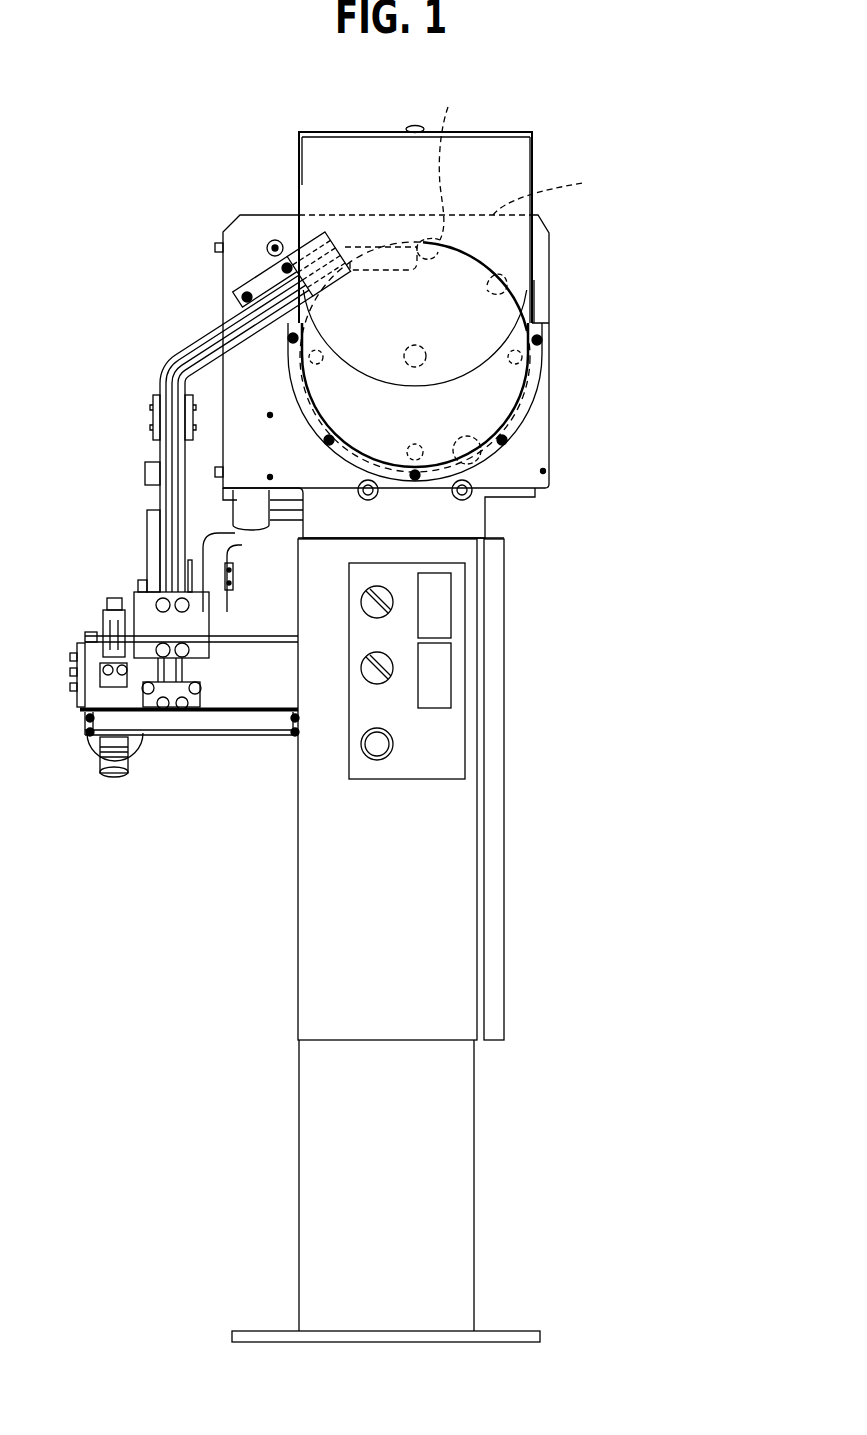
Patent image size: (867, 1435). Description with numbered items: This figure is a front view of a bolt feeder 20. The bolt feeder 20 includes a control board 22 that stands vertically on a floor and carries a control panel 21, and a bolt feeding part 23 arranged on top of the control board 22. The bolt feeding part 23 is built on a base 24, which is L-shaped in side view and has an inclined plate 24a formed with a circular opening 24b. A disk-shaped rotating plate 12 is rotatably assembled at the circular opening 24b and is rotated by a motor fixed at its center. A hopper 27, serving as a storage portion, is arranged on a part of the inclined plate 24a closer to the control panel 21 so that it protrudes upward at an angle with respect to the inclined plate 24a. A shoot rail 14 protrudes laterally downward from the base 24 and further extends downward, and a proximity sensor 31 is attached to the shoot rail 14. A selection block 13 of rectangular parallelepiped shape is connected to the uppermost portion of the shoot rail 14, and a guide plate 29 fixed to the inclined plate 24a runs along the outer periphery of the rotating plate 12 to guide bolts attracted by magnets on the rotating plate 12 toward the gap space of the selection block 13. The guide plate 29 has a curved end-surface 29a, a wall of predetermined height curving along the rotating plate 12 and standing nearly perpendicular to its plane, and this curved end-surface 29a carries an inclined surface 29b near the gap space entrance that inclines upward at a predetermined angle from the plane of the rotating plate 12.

The rotating plate 12 is at (497, 382).
The selection block 13 is at (377, 270).
The shoot rail 14 is at (183, 345).
The bolt feeder 20 is at (650, 557).
The control panel 21 is at (441, 744).
The control board 22 is at (322, 893).
The bolt feeding part 23 is at (597, 135).
The base 24 is at (440, 518).
The inclined plate 24a is at (535, 423).
The circular opening 24b is at (458, 447).
The hopper 27 is at (477, 129).
The guide plate 29 is at (550, 247).
The curved end-surface 29a is at (520, 273).
The inclined surface 29b is at (448, 165).
The proximity sensor 31 is at (145, 473).